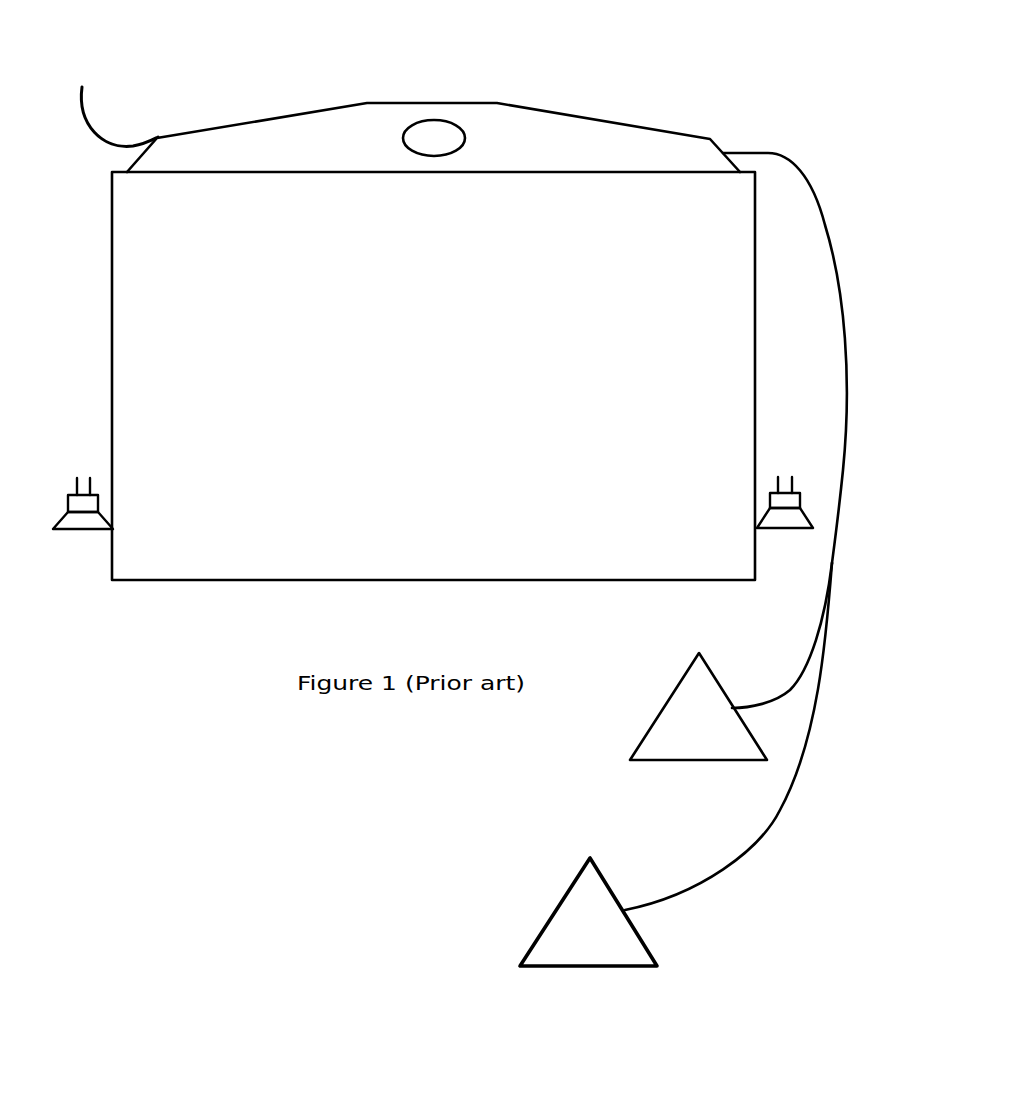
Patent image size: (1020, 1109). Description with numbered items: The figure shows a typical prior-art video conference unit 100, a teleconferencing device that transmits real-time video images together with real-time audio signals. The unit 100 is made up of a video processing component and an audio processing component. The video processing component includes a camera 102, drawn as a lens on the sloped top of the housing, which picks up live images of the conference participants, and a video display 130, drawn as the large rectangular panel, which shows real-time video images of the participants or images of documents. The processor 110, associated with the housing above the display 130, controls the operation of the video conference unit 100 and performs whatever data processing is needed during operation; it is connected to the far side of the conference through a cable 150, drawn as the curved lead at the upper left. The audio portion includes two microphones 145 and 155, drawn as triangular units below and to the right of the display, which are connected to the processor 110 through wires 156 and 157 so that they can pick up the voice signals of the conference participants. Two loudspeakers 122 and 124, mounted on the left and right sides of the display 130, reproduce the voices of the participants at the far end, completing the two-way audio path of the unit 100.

The video conference unit 100 is at (320, 67).
The camera 102 is at (452, 128).
The processor 110 is at (560, 119).
The loudspeaker 122 is at (87, 478).
The loudspeaker 124 is at (777, 477).
The video display 130 is at (757, 223).
The microphone 145 is at (673, 762).
The cable 150 is at (92, 121).
The microphone 155 is at (582, 968).
The wire 156 is at (737, 852).
The wire 157 is at (833, 521).